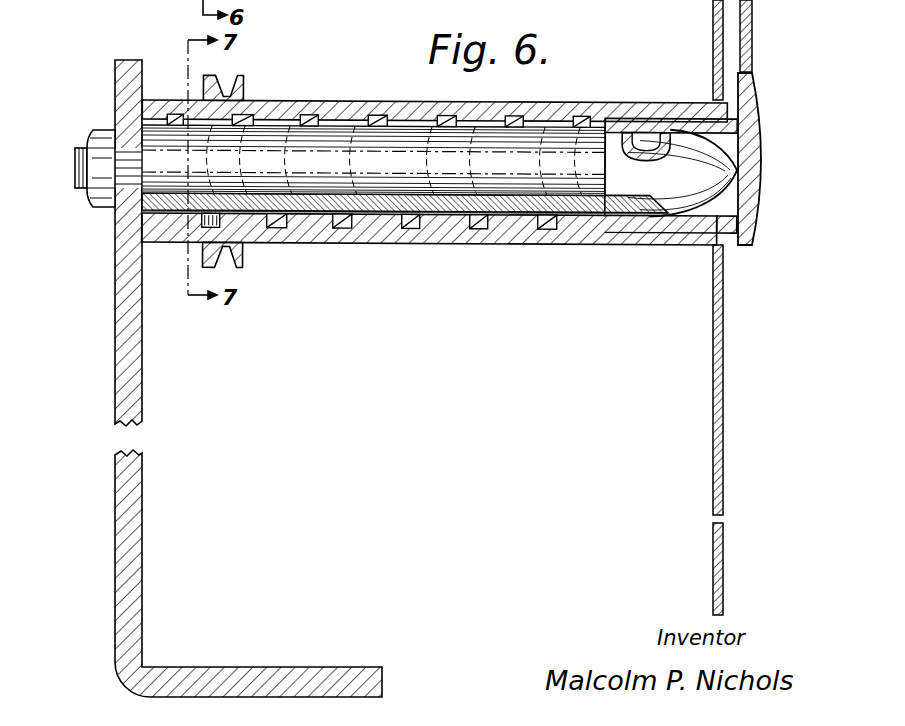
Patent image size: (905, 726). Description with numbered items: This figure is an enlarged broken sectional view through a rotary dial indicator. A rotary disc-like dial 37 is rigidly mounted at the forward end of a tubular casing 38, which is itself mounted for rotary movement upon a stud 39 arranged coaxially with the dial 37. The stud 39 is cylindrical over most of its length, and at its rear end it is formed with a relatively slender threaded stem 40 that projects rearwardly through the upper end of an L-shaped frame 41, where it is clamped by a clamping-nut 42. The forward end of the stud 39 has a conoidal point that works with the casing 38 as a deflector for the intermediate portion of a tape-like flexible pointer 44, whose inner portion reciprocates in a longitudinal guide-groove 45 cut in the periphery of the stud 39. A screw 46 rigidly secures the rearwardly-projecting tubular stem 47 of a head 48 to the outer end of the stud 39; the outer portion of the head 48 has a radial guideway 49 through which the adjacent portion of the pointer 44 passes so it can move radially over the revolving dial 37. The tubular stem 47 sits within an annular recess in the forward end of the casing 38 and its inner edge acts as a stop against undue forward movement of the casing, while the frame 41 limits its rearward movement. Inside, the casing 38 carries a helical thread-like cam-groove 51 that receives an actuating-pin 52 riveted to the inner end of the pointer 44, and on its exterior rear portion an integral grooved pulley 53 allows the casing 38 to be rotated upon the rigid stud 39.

The rotary disc-like dial 37 is at (712, 388).
The tubular casing 38 is at (520, 243).
The stud 39 is at (350, 130).
The threaded stem 40 is at (75, 168).
The L-shaped frame 41 is at (115, 288).
The clamping-nut 42 is at (95, 207).
The tape-like flexible pointer 44 is at (277, 230).
The longitudinal guide-groove 45 is at (170, 212).
The screw 46 is at (642, 118).
The tubular stem 47 is at (692, 244).
The head 48 is at (760, 192).
The radial guideway 49 is at (710, 106).
The helical cam-groove 51 is at (303, 155).
The actuating-pin 52 is at (205, 228).
The grooved pulley 53 is at (244, 86).